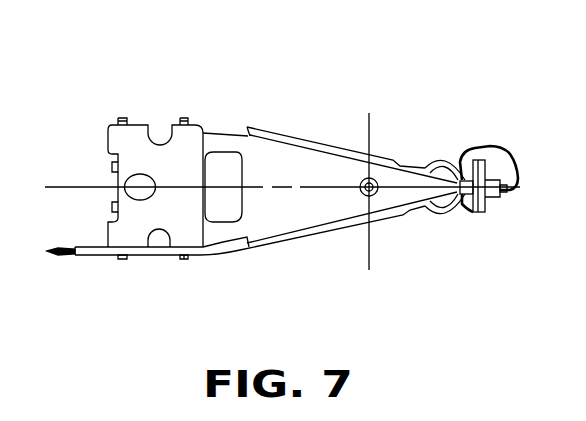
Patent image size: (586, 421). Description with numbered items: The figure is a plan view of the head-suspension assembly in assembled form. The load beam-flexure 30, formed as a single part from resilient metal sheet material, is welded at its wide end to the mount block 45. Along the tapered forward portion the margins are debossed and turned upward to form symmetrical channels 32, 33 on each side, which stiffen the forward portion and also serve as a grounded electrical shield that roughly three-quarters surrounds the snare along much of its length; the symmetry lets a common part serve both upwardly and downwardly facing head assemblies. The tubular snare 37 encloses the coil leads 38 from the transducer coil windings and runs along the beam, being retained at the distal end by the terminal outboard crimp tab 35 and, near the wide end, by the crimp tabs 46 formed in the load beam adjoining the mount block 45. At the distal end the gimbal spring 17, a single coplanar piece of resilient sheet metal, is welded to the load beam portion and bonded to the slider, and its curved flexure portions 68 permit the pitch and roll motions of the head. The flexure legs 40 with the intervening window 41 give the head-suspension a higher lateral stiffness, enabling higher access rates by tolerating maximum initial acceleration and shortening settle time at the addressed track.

The gimbal spring 17 is at (422, 163).
The load beam 30 is at (348, 142).
The channel 32 is at (306, 134).
The channel 33 is at (320, 233).
The outboard crimp tab 35 is at (478, 217).
The snare 37 is at (140, 256).
The leads 38 is at (503, 153).
The flexure legs 40 is at (223, 135).
The window 41 is at (206, 130).
The mount block 45 is at (115, 133).
The crimp tabs 46 is at (120, 256).
The curved flexure portions 68 is at (430, 162).